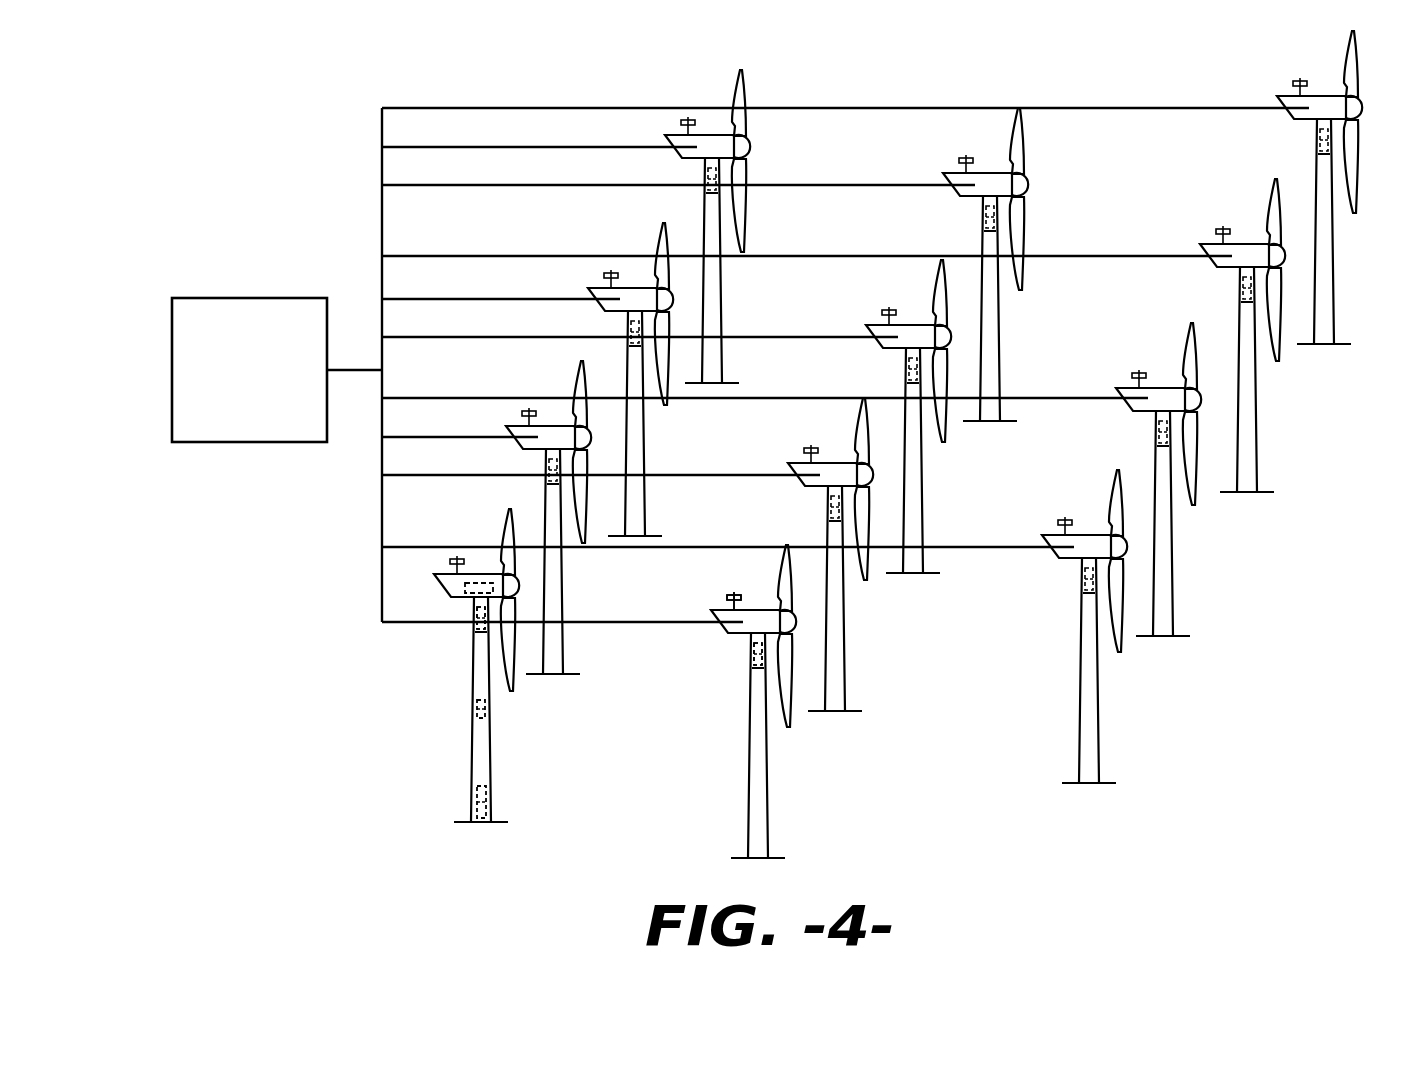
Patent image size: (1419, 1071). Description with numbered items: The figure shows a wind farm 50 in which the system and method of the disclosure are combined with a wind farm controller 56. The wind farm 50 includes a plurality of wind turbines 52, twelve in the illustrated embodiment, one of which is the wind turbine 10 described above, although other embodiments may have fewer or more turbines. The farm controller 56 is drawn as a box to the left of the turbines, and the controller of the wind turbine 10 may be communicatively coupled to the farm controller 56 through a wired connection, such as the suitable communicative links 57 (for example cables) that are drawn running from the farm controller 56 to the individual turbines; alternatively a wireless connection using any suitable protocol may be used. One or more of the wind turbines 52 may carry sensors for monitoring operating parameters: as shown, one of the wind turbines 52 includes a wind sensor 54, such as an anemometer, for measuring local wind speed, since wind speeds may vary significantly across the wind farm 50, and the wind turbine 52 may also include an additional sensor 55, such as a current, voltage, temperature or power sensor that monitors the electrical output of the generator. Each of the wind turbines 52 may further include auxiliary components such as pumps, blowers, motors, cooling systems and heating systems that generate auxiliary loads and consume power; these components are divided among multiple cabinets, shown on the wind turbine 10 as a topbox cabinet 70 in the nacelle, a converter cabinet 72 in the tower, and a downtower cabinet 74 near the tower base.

The wind turbine 10 is at (495, 752).
The wind farm 50 is at (285, 178).
The wind turbines 52 is at (565, 605).
The wind sensor 54 is at (733, 592).
The additional sensor 55 is at (472, 616).
The farm controller 56 is at (262, 383).
The communicative links 57 is at (538, 185).
The topbox cabinet 70 is at (480, 582).
The converter cabinet 72 is at (473, 710).
The downtower cabinet 74 is at (473, 802).